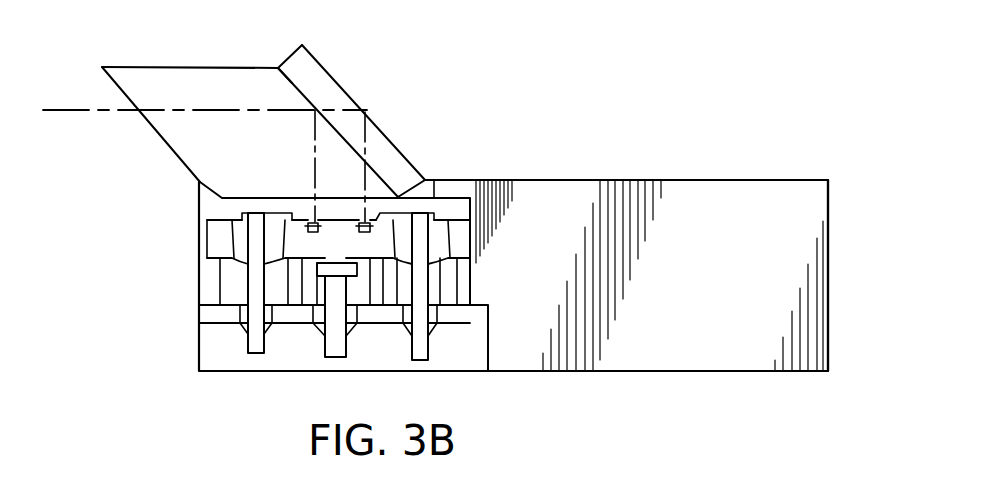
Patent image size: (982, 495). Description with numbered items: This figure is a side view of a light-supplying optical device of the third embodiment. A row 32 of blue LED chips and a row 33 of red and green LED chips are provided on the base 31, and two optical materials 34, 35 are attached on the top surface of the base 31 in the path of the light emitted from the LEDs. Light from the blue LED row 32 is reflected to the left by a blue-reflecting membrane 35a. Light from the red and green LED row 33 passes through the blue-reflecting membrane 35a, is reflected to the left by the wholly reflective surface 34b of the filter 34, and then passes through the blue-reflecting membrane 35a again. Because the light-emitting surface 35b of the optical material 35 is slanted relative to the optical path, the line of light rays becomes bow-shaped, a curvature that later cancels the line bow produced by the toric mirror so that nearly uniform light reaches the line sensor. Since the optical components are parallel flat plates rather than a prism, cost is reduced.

The base 31 is at (662, 183).
The row of blue LED chips 32 is at (312, 222).
The row of red LED chips and green LED chips 33 is at (367, 222).
The filter 34 is at (308, 70).
The wholly reflective surface 34b is at (377, 124).
The optical material 35 is at (157, 80).
The blue-reflecting membrane 35a is at (282, 80).
The light-emitting surface 35b is at (148, 121).